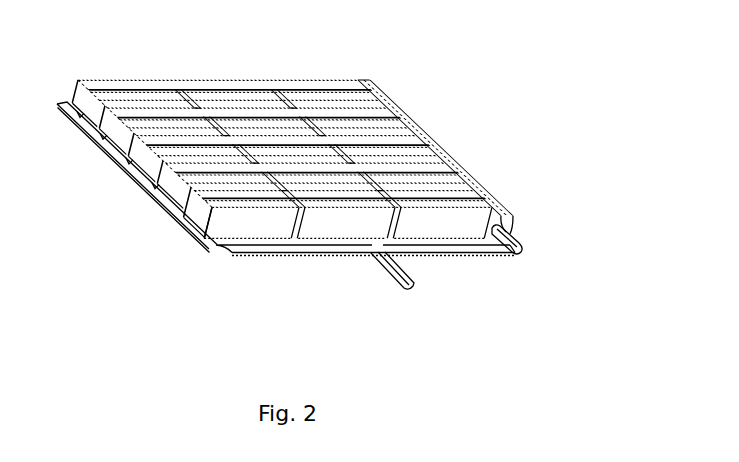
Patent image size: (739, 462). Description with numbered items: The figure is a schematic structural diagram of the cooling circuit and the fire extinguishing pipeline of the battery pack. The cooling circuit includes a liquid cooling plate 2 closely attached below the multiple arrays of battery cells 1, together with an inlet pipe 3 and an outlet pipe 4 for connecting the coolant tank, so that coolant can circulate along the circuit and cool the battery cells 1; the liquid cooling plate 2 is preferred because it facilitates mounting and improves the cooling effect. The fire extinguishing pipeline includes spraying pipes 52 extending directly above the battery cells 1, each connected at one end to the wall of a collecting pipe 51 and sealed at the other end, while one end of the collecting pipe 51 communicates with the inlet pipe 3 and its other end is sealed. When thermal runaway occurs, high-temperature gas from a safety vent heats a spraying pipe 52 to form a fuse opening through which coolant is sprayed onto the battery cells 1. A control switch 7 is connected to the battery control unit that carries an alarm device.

The battery cells 1 is at (355, 103).
The liquid cooling plate 2 is at (177, 218).
The inlet pipe 3 is at (410, 255).
The outlet pipe 4 is at (343, 255).
The control switch 7 is at (508, 245).
The collecting pipe 51 is at (477, 185).
The spraying pipe 52 is at (232, 90).